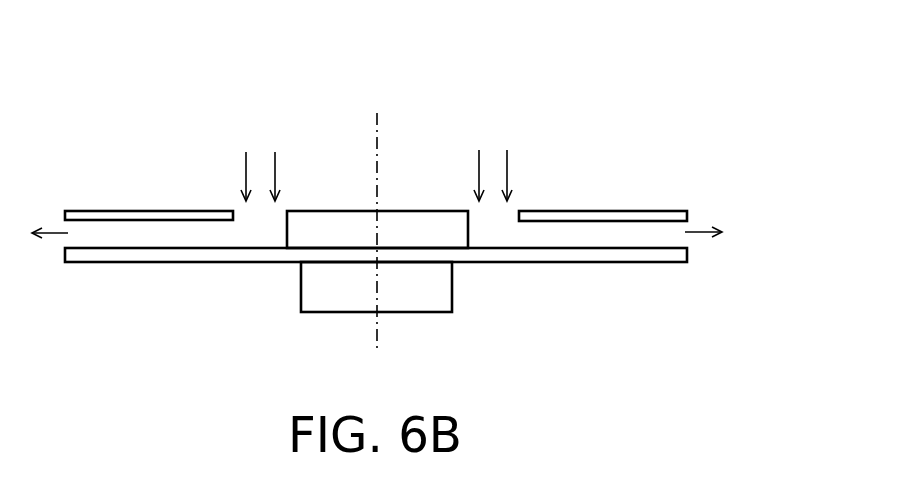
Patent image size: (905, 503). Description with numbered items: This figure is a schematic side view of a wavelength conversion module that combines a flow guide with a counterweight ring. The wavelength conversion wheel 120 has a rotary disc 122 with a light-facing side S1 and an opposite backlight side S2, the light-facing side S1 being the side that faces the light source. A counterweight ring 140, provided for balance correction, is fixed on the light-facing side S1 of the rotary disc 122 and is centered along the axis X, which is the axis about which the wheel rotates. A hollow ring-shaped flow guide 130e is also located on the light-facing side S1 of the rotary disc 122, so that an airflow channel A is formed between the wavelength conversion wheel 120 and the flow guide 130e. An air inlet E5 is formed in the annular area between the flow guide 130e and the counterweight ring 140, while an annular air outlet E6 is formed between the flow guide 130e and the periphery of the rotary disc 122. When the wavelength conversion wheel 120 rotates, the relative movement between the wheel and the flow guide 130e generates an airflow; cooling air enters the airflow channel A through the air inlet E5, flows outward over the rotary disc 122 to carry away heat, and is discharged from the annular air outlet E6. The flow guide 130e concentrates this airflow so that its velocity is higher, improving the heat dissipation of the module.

The counterweight ring 140 is at (410, 224).
The flow guide 130e is at (652, 215).
The rotary disc 122 is at (653, 255).
The wavelength conversion wheel 120 is at (440, 283).
The light-facing side S1 is at (144, 246).
The backlight side S2 is at (146, 265).
The airflow channel A is at (579, 236).
The air inlet E5 is at (376, 156).
The annular air outlet E6 is at (395, 235).
The axis X is at (377, 212).